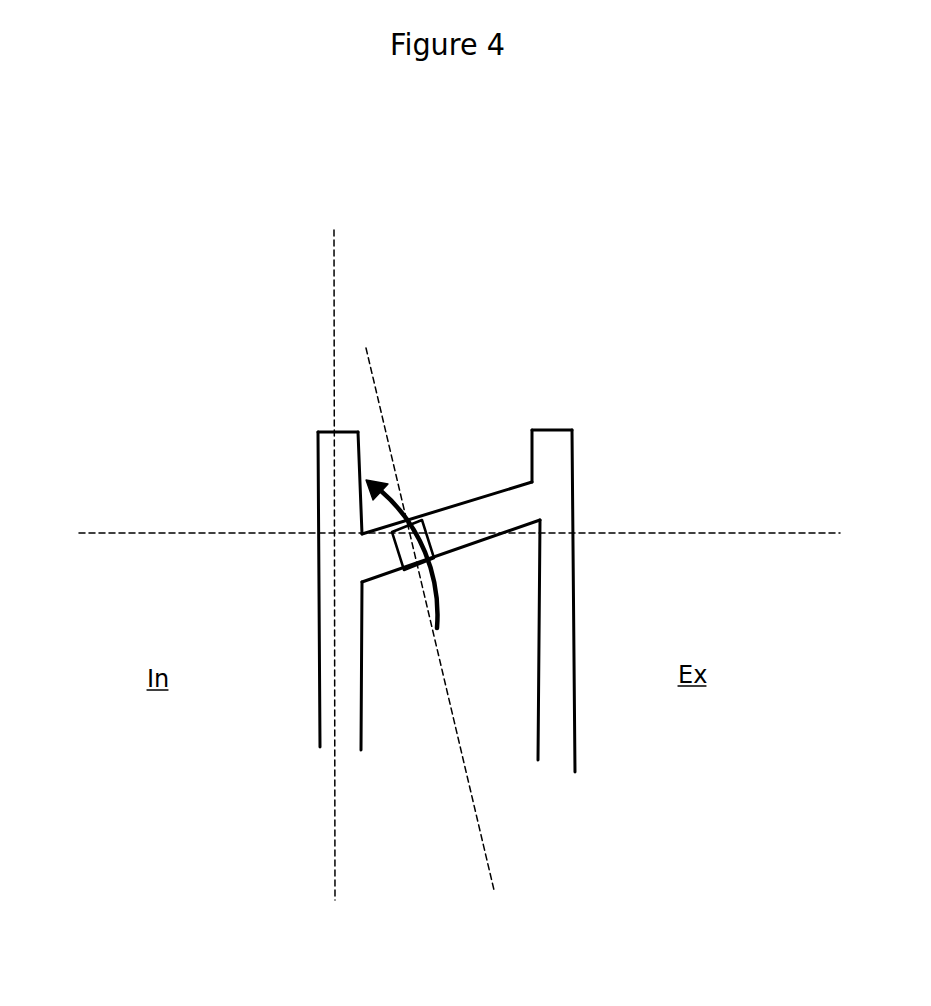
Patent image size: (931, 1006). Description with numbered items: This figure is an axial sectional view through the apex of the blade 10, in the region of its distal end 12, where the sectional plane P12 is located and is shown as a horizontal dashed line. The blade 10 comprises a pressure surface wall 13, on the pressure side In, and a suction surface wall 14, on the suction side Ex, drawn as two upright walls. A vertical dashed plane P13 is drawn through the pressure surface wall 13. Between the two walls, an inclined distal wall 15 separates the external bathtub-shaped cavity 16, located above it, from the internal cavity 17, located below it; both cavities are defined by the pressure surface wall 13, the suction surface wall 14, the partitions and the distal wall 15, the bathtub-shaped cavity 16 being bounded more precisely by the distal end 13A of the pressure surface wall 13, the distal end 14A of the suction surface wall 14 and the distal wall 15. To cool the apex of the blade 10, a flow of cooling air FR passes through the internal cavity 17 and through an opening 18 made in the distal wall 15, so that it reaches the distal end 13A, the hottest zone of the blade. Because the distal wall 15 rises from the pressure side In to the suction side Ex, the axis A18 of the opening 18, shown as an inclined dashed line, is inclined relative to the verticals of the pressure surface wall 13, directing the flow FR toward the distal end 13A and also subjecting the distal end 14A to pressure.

The blade 10 is at (715, 200).
The distal end 12 is at (130, 295).
The pressure surface wall 13 is at (322, 712).
The distal end of the pressure surface wall 13A is at (322, 458).
The suction surface wall 14 is at (557, 652).
The distal end of the suction surface wall 14A is at (557, 442).
The distal wall 15 is at (497, 520).
The external cavity 16 is at (476, 452).
The internal cavity 17 is at (420, 698).
The opening 18 is at (407, 548).
The axis of the opening A18 is at (384, 366).
The plane P12 is at (122, 545).
The plane P13 is at (324, 275).
The flow of cooling air FR is at (437, 608).